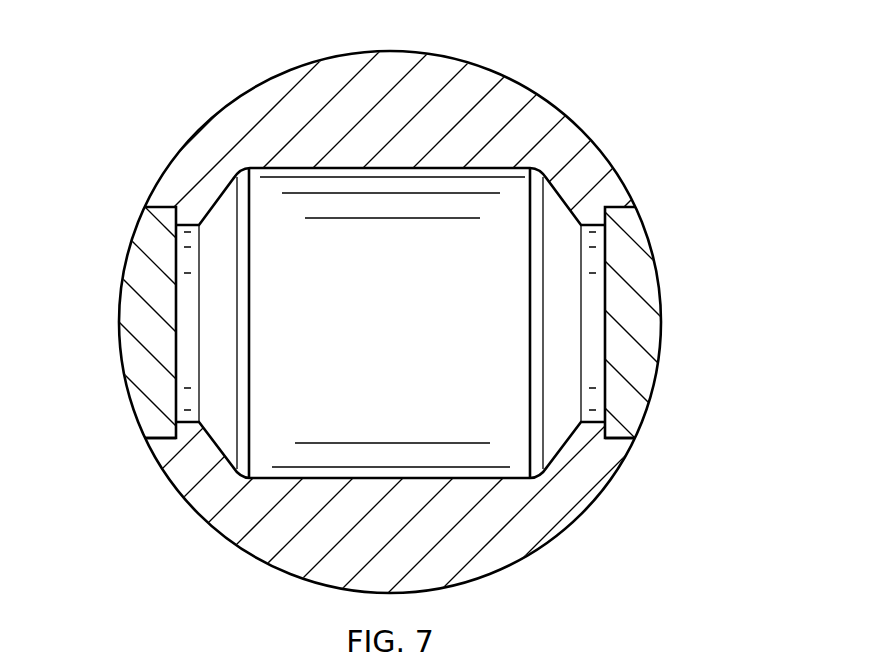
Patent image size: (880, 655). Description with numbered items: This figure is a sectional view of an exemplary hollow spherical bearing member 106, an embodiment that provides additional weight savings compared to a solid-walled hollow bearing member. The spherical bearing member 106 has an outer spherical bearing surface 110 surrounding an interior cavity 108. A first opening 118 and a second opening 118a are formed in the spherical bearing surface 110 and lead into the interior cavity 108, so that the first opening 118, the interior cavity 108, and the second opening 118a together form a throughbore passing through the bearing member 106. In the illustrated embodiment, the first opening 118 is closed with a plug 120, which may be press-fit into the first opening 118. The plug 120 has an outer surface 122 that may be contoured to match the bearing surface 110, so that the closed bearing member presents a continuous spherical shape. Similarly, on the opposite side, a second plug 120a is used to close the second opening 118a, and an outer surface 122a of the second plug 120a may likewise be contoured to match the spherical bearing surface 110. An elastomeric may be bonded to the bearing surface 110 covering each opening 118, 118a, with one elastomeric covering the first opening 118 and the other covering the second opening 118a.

The hollow spherical bearing member 106 is at (268, 73).
The spherical bearing surface 110 is at (547, 105).
The interior cavity 108 is at (413, 339).
The outer surface of second plug 122a is at (127, 264).
The second opening 118a is at (120, 313).
The second plug 120a is at (130, 365).
The outer surface of plug 122 is at (661, 284).
The first opening 118 is at (663, 335).
The plug 120 is at (645, 378).